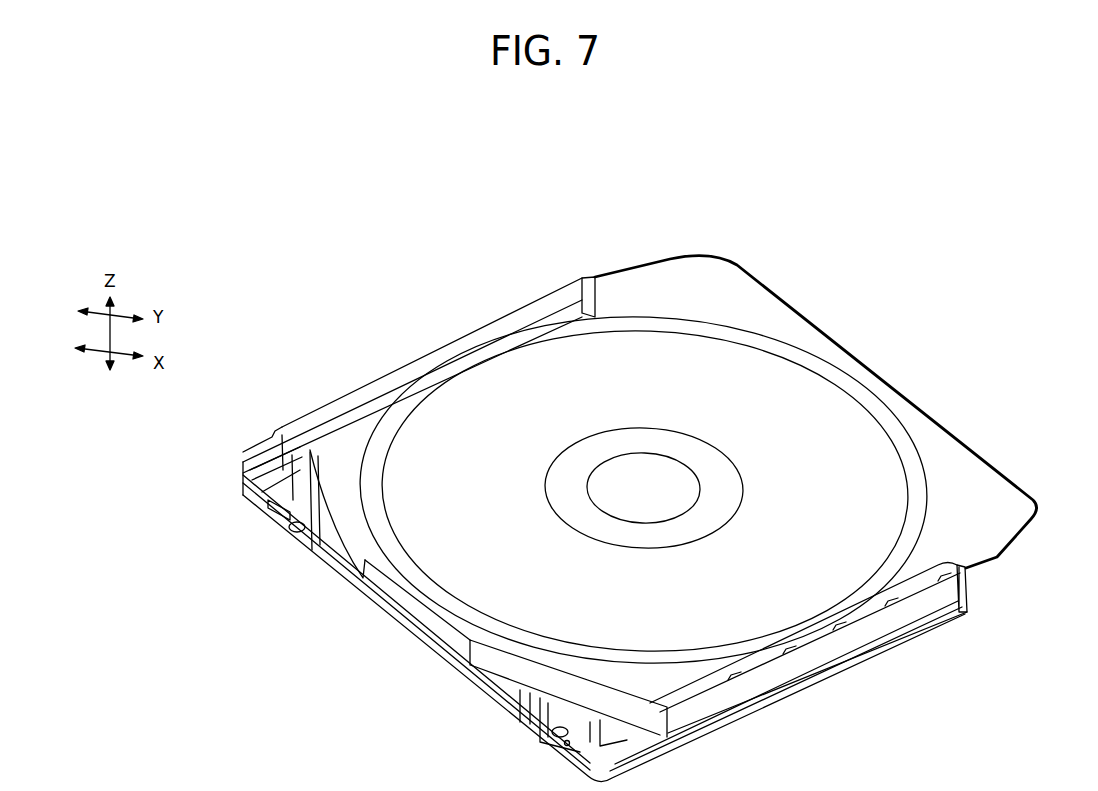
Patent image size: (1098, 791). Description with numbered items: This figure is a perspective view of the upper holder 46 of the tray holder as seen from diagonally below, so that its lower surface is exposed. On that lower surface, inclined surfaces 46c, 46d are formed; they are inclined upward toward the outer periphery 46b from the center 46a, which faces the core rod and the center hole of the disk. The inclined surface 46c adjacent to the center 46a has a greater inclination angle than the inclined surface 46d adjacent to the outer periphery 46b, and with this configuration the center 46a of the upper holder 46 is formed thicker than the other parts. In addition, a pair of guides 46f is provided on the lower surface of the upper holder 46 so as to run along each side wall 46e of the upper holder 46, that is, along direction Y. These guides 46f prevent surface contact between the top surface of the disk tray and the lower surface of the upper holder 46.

The upper holder 46 is at (697, 285).
The center 46a is at (640, 478).
The outer periphery 46b is at (449, 596).
The inclined surface 46c is at (707, 472).
The inclined surface 46d is at (783, 382).
The side wall 46e is at (421, 372).
The guide 46f is at (598, 275).